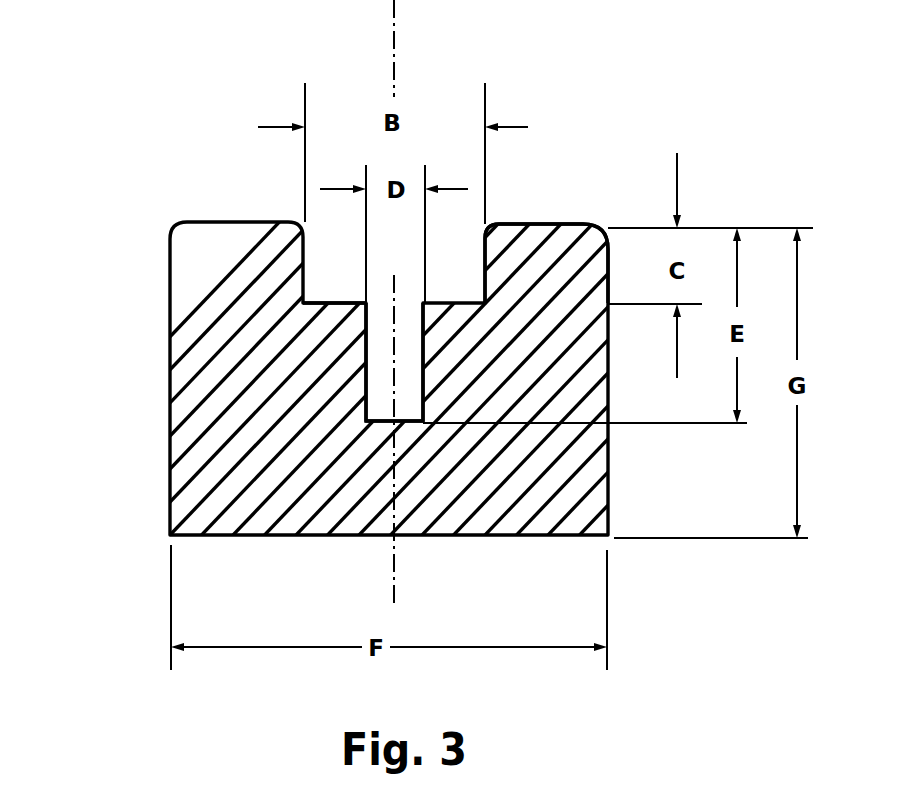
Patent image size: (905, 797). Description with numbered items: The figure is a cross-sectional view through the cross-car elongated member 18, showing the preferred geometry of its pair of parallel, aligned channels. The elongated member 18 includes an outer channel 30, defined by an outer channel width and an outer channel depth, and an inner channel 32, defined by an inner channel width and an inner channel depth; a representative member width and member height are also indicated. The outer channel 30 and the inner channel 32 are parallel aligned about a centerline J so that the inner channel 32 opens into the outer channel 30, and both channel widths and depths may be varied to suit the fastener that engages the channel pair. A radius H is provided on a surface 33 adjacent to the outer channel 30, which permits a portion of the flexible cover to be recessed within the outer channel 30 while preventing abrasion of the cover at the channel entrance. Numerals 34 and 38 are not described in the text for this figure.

The cross-car elongated member 18 is at (170, 238).
The outer channel 30 is at (318, 287).
The inner channel 32 is at (380, 406).
The surface 33 is at (550, 223).
The lower element 34 is at (100, 793).
The lower element 38 is at (610, 793).
The centerline J is at (394, 32).
The radius H is at (293, 221).